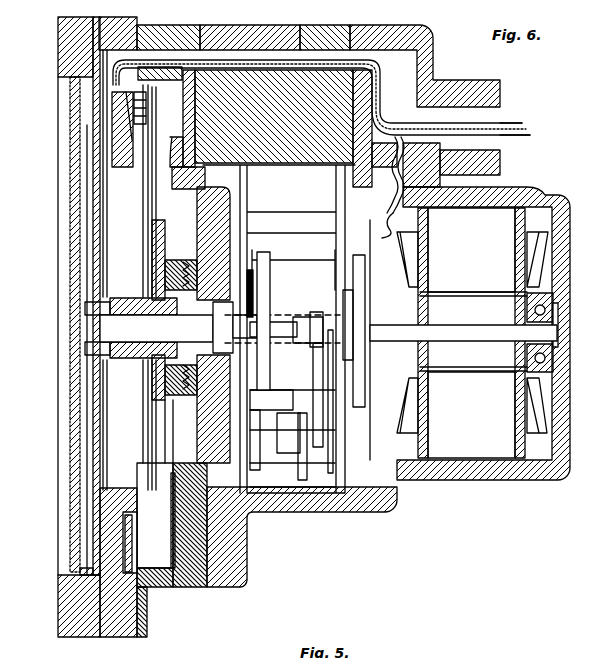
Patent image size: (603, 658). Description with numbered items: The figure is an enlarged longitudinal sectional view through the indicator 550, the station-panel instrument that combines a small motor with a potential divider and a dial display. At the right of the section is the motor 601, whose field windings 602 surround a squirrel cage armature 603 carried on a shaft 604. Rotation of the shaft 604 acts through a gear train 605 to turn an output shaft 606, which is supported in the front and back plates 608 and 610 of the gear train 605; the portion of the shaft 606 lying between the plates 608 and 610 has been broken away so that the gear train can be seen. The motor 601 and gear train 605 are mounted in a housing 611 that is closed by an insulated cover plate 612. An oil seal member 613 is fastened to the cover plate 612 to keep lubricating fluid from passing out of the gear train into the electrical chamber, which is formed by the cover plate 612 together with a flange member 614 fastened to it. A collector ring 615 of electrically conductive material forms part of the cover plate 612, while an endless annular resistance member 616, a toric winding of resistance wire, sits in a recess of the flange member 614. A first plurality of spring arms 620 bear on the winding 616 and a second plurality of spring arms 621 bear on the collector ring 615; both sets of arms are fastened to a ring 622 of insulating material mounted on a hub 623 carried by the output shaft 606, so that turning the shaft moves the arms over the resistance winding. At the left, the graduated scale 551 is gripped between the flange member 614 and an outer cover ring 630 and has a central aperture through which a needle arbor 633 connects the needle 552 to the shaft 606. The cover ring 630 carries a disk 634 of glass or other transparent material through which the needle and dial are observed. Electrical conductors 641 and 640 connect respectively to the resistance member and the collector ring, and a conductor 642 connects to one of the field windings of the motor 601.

The indicator 550 is at (410, 498).
The graduated scale 551 is at (103, 212).
The needle 552 is at (87, 238).
The motor 601 is at (410, 312).
The field windings 602 is at (471, 333).
The squirrel cage armature 603 is at (473, 331).
The shaft 604 is at (397, 332).
The gear train 605 is at (293, 320).
The output shaft 606 is at (110, 327).
The front plate 608 is at (242, 177).
The back plate 610 is at (335, 188).
The housing 611 is at (360, 505).
The insulated cover plate 612 is at (182, 577).
The oil seal member 613 is at (193, 408).
The flange member 614 is at (123, 625).
The collector ring 615 is at (173, 500).
The annular resistance member 616 is at (132, 542).
The first plurality of spring arms 620 is at (150, 180).
The second plurality of spring arms 621 is at (150, 460).
The ring 622 is at (157, 258).
The hub 623 is at (133, 353).
The outer cover ring 630 is at (72, 608).
The needle arbor 633 is at (107, 300).
The disk 634 is at (72, 115).
The electrical conductor 640 is at (257, 57).
The electrical conductor 641 is at (315, 67).
The conductor 642 is at (512, 140).